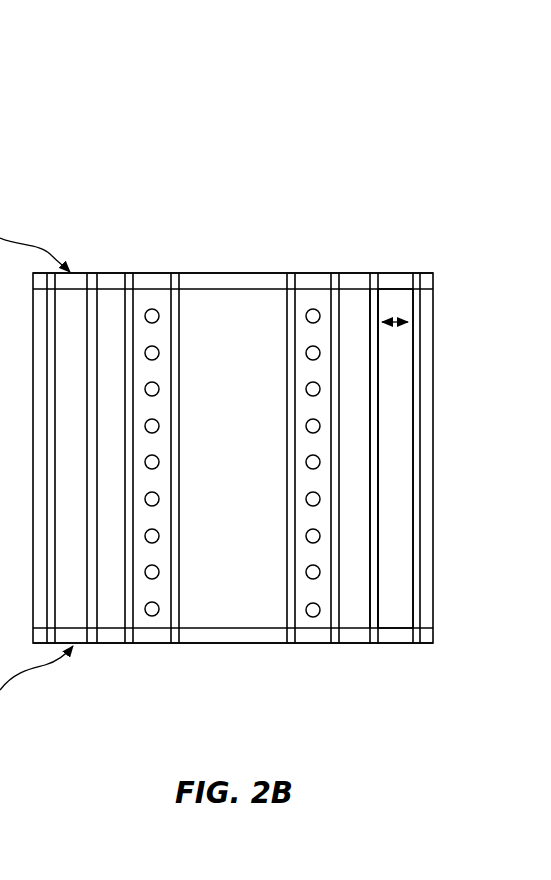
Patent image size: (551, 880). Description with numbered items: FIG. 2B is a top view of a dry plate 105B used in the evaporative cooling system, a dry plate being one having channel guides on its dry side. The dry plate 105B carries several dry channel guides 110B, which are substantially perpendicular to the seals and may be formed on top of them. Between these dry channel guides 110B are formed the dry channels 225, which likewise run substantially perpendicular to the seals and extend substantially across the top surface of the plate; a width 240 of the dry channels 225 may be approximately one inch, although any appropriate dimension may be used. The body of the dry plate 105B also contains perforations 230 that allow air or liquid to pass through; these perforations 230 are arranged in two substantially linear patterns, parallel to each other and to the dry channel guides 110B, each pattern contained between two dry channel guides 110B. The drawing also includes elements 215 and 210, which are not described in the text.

The dry plate 105B is at (233, 127).
The frame 215 is at (358, 241).
The width of the dry channels 240 is at (400, 298).
The dry channel guide 110B is at (378, 473).
The dry channel 225 is at (393, 572).
The perforation 230 is at (155, 617).
The substrate 210 is at (413, 689).